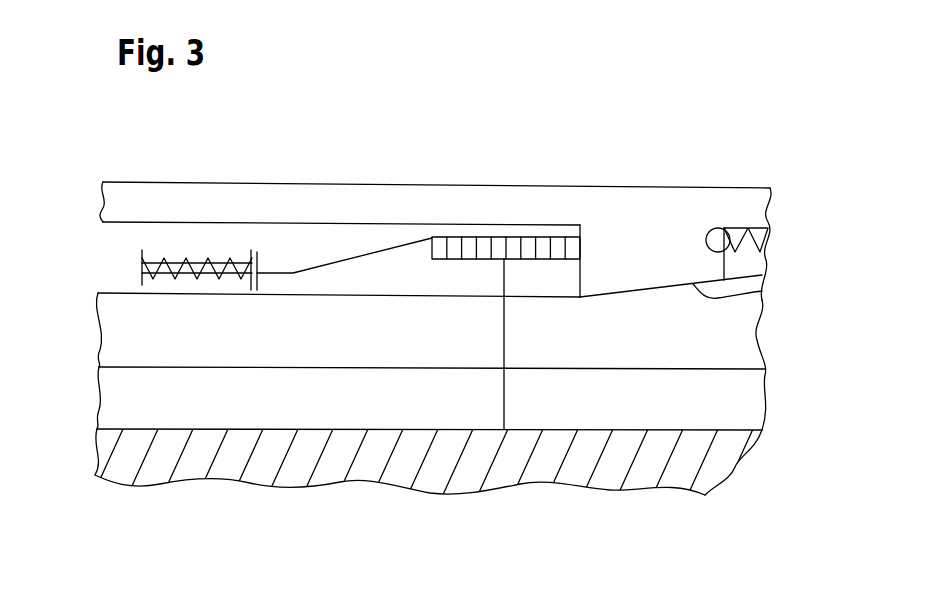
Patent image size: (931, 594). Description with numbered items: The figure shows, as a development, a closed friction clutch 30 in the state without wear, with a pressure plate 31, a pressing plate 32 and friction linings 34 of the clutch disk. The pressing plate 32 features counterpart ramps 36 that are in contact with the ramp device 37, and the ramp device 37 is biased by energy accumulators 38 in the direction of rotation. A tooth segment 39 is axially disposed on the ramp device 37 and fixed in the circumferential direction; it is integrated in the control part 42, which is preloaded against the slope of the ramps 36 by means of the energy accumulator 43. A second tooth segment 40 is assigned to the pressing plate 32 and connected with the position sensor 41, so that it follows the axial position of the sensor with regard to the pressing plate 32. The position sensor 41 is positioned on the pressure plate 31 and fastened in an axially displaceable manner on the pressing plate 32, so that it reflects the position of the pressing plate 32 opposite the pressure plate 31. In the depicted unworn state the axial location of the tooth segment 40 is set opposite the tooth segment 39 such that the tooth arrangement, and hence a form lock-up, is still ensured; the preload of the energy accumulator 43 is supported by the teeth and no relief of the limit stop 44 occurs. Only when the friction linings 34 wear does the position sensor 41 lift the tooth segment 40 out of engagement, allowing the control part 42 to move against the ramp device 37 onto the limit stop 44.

The friction clutch 30 is at (486, 128).
The pressure plate 31 is at (413, 478).
The pressing plate 32 is at (735, 345).
The friction linings 34 is at (122, 398).
The counterpart ramps 36 is at (762, 291).
The ramp device 37 is at (662, 198).
The energy accumulators 38 is at (770, 240).
The tooth segment 39 is at (532, 258).
The tooth segment 40 is at (457, 237).
The position sensor 41 is at (504, 338).
The control part 42 is at (340, 262).
The energy accumulator 43 is at (190, 257).
The limit stop 44 is at (258, 279).